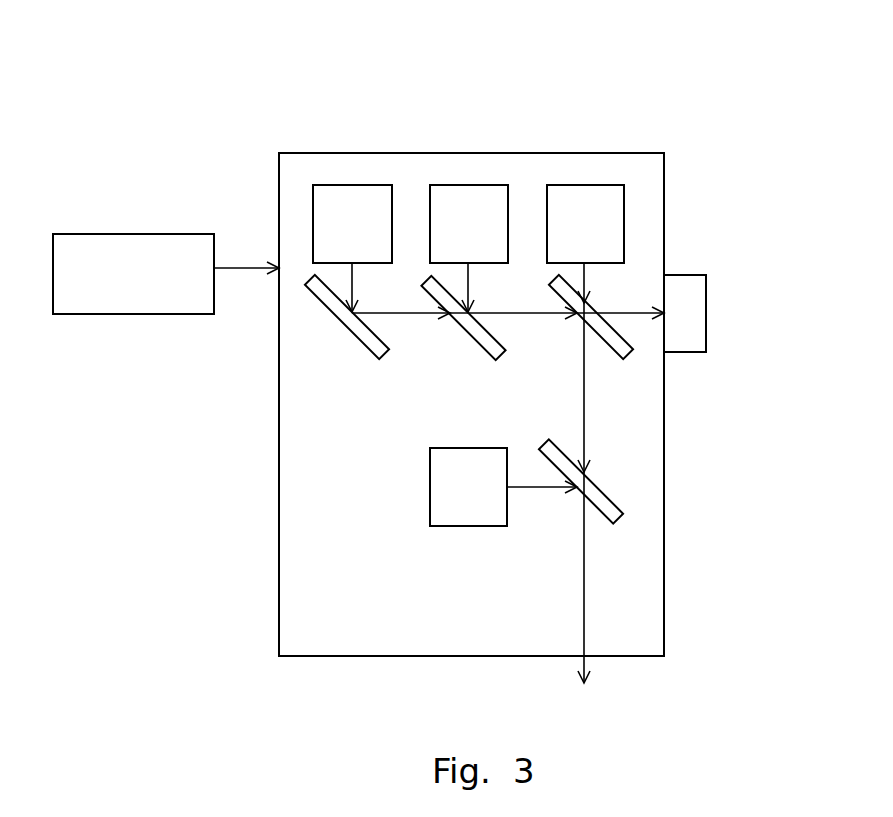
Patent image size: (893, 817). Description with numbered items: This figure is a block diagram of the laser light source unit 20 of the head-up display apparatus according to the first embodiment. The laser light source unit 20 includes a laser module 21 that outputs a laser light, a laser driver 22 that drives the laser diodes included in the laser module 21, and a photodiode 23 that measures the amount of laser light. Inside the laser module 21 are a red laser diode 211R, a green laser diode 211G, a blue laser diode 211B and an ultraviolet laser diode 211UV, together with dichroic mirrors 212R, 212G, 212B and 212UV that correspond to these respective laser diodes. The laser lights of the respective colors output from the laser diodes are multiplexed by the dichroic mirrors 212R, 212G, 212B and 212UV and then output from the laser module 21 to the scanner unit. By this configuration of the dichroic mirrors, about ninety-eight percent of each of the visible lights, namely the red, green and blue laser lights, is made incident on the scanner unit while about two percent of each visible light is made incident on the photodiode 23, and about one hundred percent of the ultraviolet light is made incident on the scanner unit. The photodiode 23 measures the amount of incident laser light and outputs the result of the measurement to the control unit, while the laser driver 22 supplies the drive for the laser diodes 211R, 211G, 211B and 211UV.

The laser light source unit 20 is at (645, 32).
The laser module 21 is at (664, 171).
The laser driver 22 is at (200, 232).
The photodiode 23 is at (706, 313).
The red laser diode 211R is at (360, 184).
The green laser diode 211G is at (482, 184).
The blue laser diode 211B is at (606, 184).
The ultraviolet laser diode 211UV is at (492, 526).
The dichroic mirror 212R is at (386, 353).
The dichroic mirror 212G is at (503, 360).
The dichroic mirror 212B is at (617, 362).
The dichroic mirror 212UV is at (612, 516).